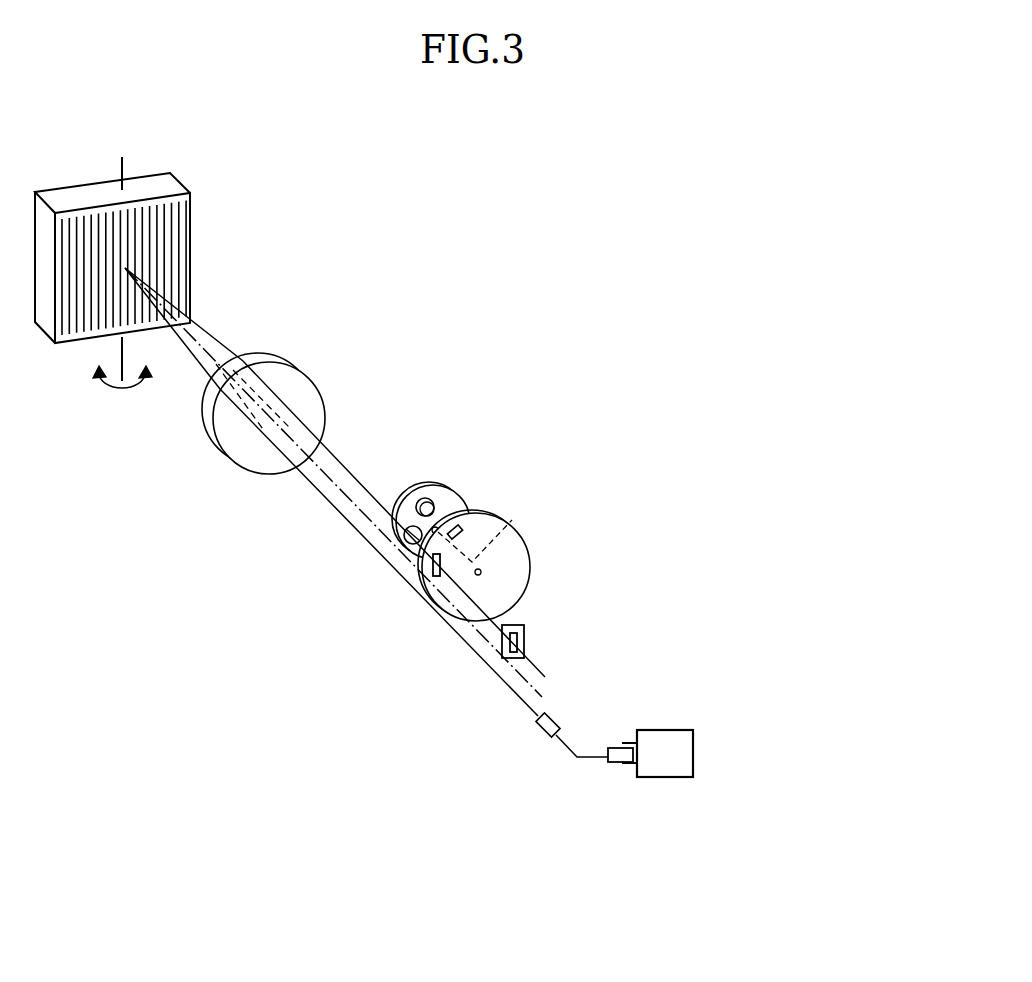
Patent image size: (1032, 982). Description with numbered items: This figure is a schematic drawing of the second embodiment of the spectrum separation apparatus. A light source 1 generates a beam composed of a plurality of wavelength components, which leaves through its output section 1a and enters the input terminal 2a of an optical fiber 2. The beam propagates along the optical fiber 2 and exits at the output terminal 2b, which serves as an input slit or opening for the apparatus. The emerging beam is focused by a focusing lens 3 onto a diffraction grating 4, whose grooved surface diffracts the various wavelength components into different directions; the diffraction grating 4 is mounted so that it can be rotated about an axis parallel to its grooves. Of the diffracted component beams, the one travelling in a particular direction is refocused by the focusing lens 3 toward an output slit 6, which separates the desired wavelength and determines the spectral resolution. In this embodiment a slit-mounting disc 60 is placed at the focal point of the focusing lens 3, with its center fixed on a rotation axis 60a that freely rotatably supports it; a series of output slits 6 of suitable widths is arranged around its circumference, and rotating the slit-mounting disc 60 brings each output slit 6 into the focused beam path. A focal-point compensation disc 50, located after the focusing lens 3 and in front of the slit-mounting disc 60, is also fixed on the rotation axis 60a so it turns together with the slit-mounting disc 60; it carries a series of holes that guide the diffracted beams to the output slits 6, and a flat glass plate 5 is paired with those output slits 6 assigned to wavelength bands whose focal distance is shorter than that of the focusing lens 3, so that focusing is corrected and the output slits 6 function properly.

The light source 1 is at (665, 778).
The output section 1a is at (628, 743).
The optical fiber 2 is at (577, 757).
The input terminal 2a is at (613, 763).
The output terminal 2b is at (538, 733).
The focusing lens 3 is at (227, 453).
The diffraction grating 4 is at (192, 245).
The flat glass plate 5 is at (413, 527).
The output slit 6 is at (428, 574).
The focal-point compensation disc 50 is at (447, 491).
The slit-mounting disc 60 is at (533, 585).
The rotation axis 60a is at (511, 527).